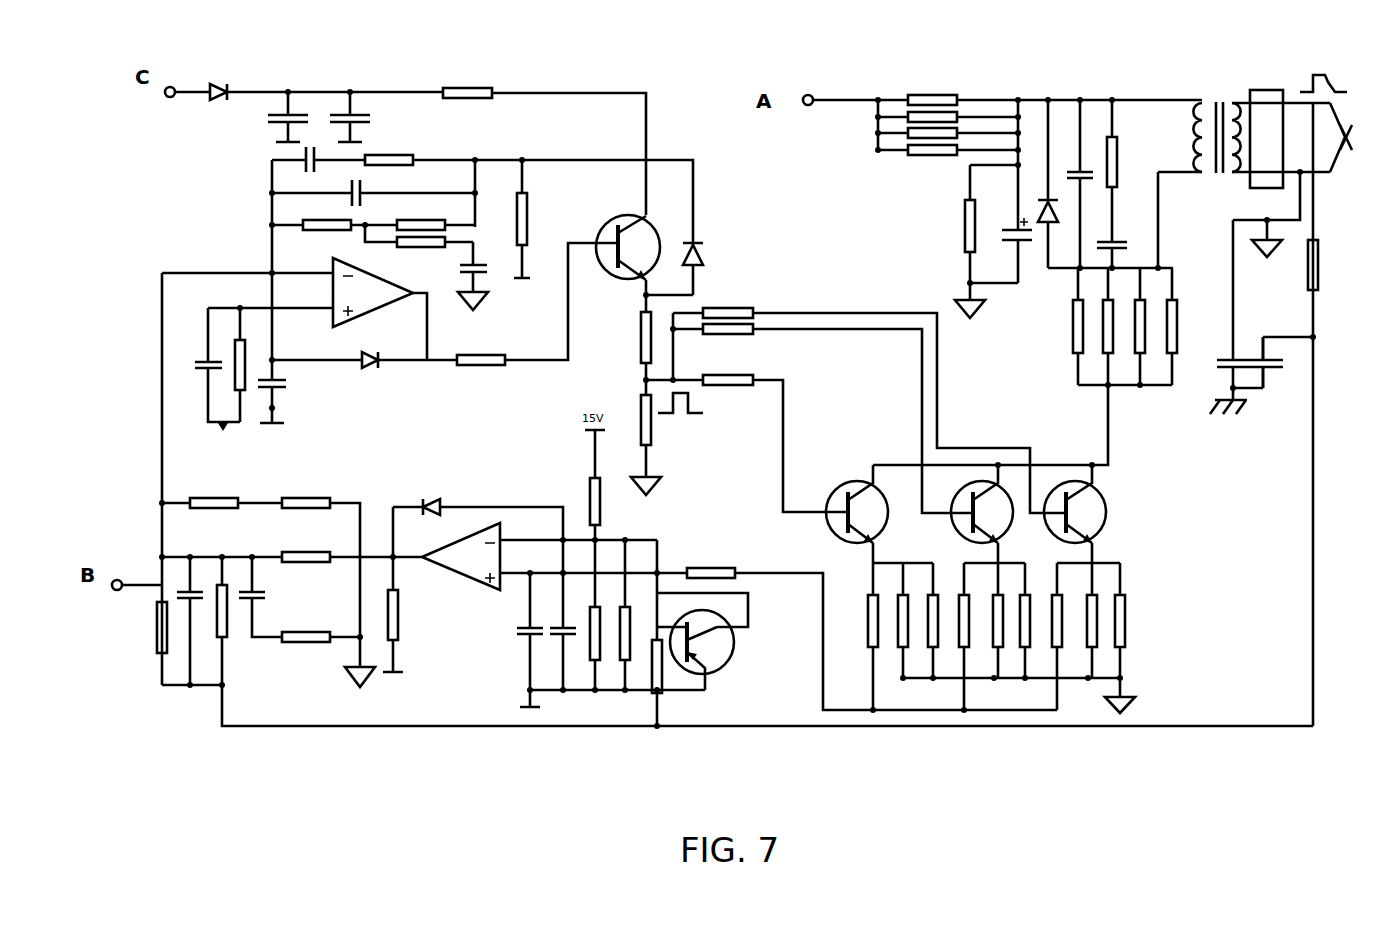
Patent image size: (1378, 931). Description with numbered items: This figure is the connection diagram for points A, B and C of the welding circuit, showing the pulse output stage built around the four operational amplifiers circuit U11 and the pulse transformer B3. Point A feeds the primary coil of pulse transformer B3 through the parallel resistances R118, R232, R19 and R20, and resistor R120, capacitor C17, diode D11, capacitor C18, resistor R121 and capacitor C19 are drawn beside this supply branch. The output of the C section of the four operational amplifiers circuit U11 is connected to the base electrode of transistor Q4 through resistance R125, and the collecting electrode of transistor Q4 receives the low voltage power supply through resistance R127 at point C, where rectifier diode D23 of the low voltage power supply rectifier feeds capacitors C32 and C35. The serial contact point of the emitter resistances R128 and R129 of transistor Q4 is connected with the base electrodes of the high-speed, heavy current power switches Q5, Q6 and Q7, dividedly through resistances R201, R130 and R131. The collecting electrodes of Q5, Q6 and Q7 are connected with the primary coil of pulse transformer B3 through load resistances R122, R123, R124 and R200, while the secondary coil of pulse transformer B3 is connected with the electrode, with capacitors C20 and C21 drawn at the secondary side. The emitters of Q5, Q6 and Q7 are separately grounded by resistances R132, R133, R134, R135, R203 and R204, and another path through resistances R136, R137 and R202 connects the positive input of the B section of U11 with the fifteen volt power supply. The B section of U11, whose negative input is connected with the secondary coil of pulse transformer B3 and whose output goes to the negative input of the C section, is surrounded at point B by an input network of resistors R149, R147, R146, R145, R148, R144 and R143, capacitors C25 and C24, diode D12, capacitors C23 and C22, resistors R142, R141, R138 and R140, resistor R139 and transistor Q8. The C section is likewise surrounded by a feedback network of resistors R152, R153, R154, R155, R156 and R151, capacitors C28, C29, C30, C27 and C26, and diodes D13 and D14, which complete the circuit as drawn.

The rectifier diode D23 is at (215, 89).
The capacitor 1000u C32 is at (305, 117).
The capacitor 1000u C35 is at (367, 117).
The resistance R127 is at (466, 94).
The resistor 3.3K R152 is at (392, 150).
The capacitor 302 C28 is at (310, 169).
The capacitor 302 C29 is at (380, 192).
The resistor 180K R153 is at (332, 232).
The resistor 180K R154 is at (426, 216).
The resistor 22K R155 is at (423, 251).
The resistor 2K R156 is at (535, 219).
The capacitor 10u C30 is at (485, 276).
The capacitor 104 C27 is at (284, 390).
The capacitor 104 C26 is at (200, 387).
The resistor 1K R151 is at (232, 370).
The four operational amplifiers circuit U11 is at (394, 425).
The diode 1N4148 D13 is at (368, 359).
The resistance R125 is at (481, 361).
The transistor Q4 is at (642, 246).
The diode 1N4148 D14 is at (715, 247).
The emitter resistance R128 is at (631, 336).
The emitter resistance R129 is at (635, 433).
The resistance R201 is at (729, 307).
The resistance R130 is at (729, 338).
The resistance R131 is at (729, 373).
The resistor 6.65K R140 is at (611, 500).
The resistor 15K R142 is at (589, 648).
The resistor 40.2K R149 is at (154, 635).
The resistor 604 R147 is at (216, 496).
The resistor 604 R146 is at (308, 496).
The resistor 560K R145 is at (312, 550).
The capacitor 302 C25 is at (188, 623).
The resistor 40.2K R148 is at (223, 626).
The capacitor 473 C24 is at (264, 600).
The resistor 150 R144 is at (308, 630).
The resistor 10K R143 is at (385, 629).
The diode 1N4148 D12 is at (440, 498).
The capacitor 103 C23 is at (527, 659).
The capacitor 103 C22 is at (561, 659).
The resistor 20K R141 is at (619, 648).
The resistor 15M R138 is at (651, 663).
The transistor 2N3906 Q8 is at (715, 651).
The resistor 7.5K R139 is at (716, 566).
The high-speed, heavy current power switch Q5 is at (876, 506).
The high-speed, heavy current power switch Q6 is at (998, 506).
The high-speed, heavy current power switch Q7 is at (1092, 506).
The resistance R136 is at (867, 623).
The resistance R132 is at (897, 618).
The resistance R133 is at (927, 618).
The resistance R137 is at (958, 623).
The resistance R134 is at (991, 618).
The resistance R135 is at (1019, 618).
The resistance R202 is at (1051, 623).
The resistance R203 is at (1085, 618).
The resistance R204 is at (1114, 618).
The resistance R118 is at (966, 93).
The resistance R232 is at (880, 119).
The resistance R19 is at (880, 135).
The resistance R20 is at (880, 152).
The resistor 2K 50W R120 is at (955, 230).
The capacitor 5600u 250V C17 is at (1007, 233).
The diode G1524 D11 is at (1044, 172).
The capacitor 102 1KV C18 is at (1081, 149).
The resistor 4.7 ohm R121 is at (1118, 164).
The capacitor 474 630V C19 is at (1125, 212).
The load resistance R122 is at (1206, 296).
The load resistance R200 is at (1103, 317).
The load resistance R123 is at (1135, 317).
The load resistance R124 is at (1167, 317).
The pulse transformer B3 is at (1238, 139).
The capacitor 104 C20 is at (1249, 336).
The capacitor 104 C21 is at (1278, 368).